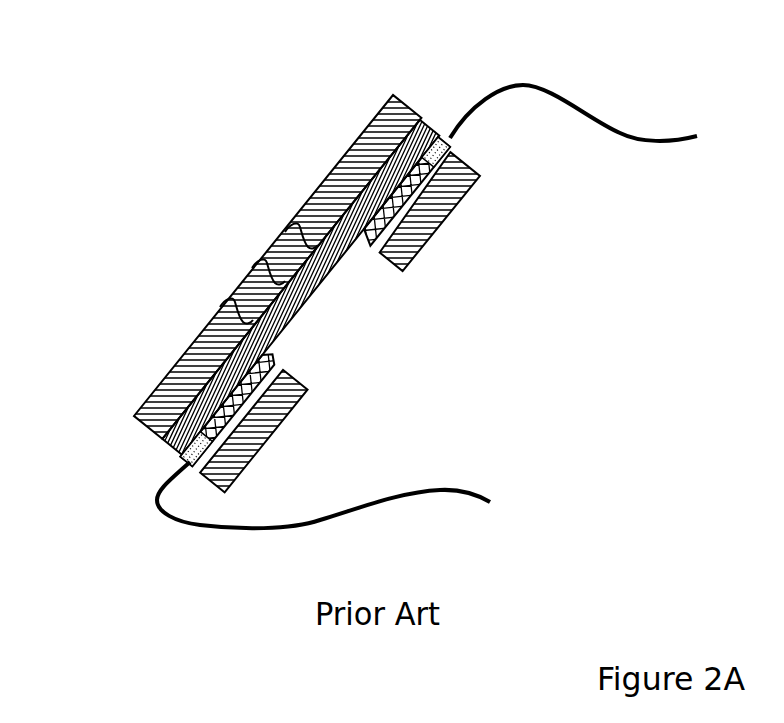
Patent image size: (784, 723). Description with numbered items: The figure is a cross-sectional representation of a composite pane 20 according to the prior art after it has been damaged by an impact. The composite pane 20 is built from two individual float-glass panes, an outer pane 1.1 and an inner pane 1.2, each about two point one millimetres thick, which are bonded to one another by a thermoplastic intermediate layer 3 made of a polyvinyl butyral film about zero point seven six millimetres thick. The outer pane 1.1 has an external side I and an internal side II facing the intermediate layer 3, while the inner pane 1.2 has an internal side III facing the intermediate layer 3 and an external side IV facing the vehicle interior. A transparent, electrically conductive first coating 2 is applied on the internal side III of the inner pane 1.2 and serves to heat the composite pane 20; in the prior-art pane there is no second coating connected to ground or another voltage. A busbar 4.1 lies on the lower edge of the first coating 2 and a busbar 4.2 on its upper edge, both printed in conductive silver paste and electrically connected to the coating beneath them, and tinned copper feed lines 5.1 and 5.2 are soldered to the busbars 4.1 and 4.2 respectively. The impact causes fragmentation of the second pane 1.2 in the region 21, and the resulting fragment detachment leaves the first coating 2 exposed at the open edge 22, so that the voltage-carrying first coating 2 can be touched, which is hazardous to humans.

The first pane, outer pane 1.1 is at (337, 180).
The second pane, inner pane 1.2 is at (465, 168).
The first coating 2 is at (397, 223).
The intermediate layer 3 is at (230, 365).
The busbar 4.1 is at (178, 447).
The busbar 4.2 is at (447, 150).
The feed line 5.1 is at (160, 510).
The feed line 5.2 is at (625, 130).
The composite pane according to the prior art 20 is at (293, 127).
The fragmentation of the second pane 21 is at (364, 348).
The open edge of the first coating 22 is at (287, 356).
The external side of the outer pane I is at (383, 98).
The internal side of the outer pane II is at (428, 122).
The internal side of the inner pane III is at (458, 150).
The external side of the inner pane IV is at (468, 207).